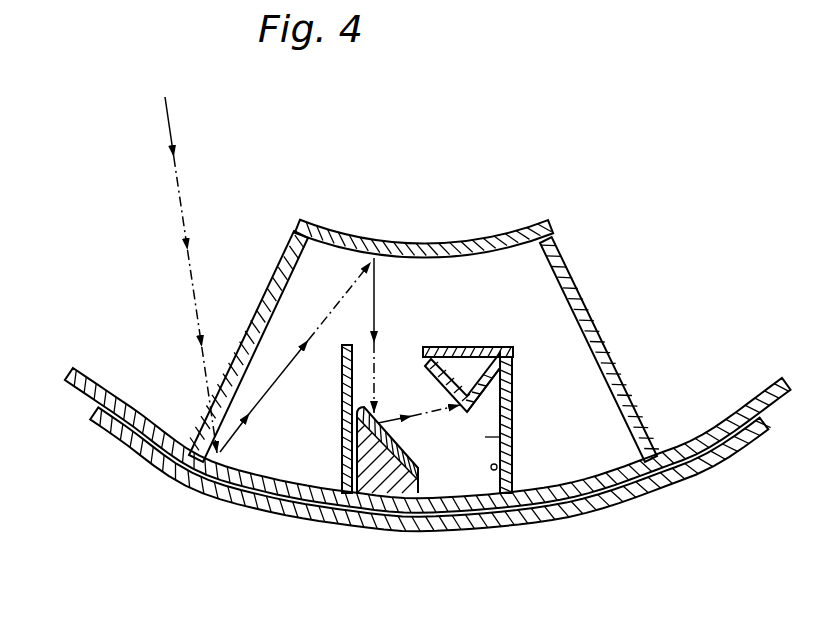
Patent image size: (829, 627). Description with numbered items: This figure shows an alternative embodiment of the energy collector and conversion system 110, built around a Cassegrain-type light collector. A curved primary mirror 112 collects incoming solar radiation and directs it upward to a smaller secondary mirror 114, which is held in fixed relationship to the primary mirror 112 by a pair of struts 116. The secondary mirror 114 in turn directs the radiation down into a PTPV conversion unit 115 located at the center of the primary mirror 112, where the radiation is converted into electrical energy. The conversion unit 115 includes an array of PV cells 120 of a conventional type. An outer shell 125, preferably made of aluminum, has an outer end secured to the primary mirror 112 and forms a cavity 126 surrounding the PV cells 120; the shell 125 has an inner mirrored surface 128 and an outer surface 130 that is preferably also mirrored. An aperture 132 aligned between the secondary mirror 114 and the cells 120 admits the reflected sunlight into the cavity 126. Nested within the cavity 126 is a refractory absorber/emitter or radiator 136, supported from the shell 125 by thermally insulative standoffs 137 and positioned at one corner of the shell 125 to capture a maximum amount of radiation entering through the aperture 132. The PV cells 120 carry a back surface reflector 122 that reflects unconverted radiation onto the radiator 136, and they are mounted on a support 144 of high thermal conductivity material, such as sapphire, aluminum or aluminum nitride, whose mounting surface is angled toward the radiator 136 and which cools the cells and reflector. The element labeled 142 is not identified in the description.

The system 110 is at (358, 208).
The primary mirror 112 is at (74, 368).
The secondary mirror 114 is at (304, 212).
The PTPV conversion unit 115 is at (502, 399).
The struts 116 is at (268, 292).
The PV cells 120 is at (368, 459).
The back surface reflector 122 is at (421, 478).
The outer shell 125 is at (514, 410).
The cavity 126 is at (485, 437).
The inner mirrored surface 128 is at (495, 464).
The outer surface 130 is at (343, 458).
The aperture 132 is at (399, 335).
The radiator 136 is at (477, 354).
The thermally insulative standoffs 137 is at (487, 381).
The inner support ring 142 is at (175, 481).
The support 144 is at (380, 490).